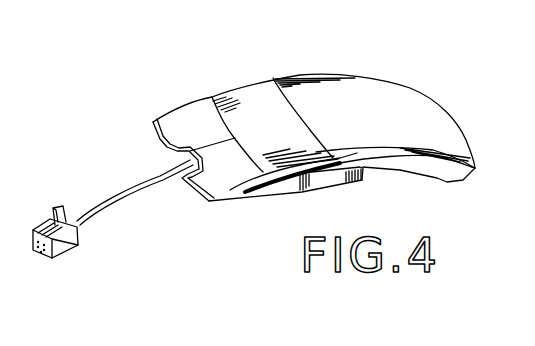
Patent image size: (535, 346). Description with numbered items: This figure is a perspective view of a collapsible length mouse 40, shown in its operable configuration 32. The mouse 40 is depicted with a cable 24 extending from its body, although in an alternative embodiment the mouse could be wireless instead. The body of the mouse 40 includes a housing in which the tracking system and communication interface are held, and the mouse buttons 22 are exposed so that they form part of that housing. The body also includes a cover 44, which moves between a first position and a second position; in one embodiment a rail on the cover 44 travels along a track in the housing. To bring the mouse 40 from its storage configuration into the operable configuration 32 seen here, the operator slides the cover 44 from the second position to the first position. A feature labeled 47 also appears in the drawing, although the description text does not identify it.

The collapsible length mouse 40 is at (333, 57).
The mouse buttons 22 is at (192, 107).
The window 47 is at (252, 97).
The cover 44 is at (388, 90).
The operable configuration 32 is at (364, 121).
The cable 24 is at (118, 187).